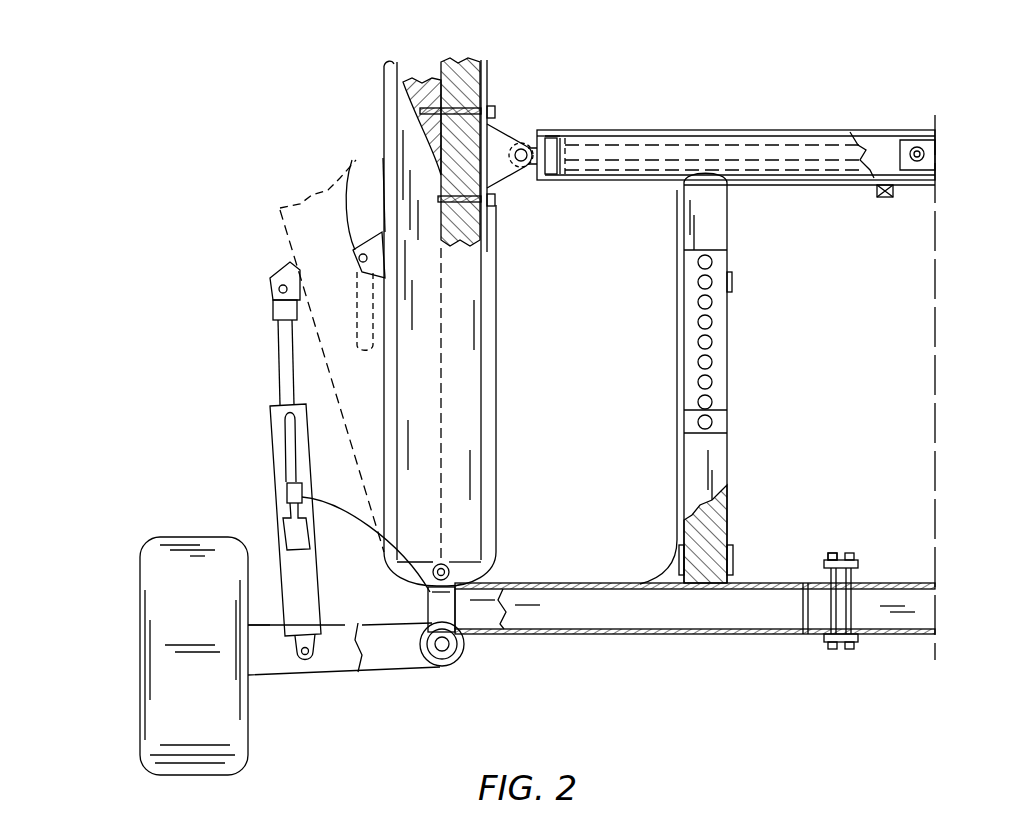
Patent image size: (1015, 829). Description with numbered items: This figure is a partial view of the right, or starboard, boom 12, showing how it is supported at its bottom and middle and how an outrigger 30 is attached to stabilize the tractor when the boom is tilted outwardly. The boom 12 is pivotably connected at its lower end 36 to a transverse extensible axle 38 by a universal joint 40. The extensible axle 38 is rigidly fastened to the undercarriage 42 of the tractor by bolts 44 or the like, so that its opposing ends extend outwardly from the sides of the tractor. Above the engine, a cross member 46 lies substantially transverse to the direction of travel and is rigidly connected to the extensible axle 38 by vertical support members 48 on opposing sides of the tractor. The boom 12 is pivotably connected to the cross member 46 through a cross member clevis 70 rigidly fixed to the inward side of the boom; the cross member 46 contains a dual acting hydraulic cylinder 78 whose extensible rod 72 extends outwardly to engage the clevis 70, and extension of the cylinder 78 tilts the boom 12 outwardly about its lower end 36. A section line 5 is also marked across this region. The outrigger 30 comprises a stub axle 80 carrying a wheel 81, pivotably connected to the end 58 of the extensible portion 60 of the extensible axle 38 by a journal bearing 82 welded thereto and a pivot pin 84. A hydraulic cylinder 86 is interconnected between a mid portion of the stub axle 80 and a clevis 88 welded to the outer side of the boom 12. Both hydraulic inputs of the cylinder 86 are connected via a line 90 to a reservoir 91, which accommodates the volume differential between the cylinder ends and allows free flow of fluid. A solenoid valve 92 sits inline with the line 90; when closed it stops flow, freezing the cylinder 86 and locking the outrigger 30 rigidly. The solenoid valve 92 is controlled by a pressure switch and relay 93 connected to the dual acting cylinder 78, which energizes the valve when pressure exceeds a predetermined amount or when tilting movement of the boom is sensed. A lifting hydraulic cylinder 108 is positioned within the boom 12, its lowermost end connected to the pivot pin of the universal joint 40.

The section line 5- 5 is at (384, 155).
The boom 12 is at (490, 100).
The outrigger 30 is at (262, 533).
The lower end 36 is at (500, 563).
The extensible axle 38 is at (497, 636).
The universal joint 40 is at (410, 592).
The undercarriage 42 is at (855, 585).
The bolts 44 is at (852, 555).
The cross member 46 is at (822, 130).
The vertical support members 48 is at (728, 480).
The end 58 is at (258, 628).
The extensible portion 60 is at (428, 608).
The cross member clevis 70 is at (518, 146).
The extensible rod 72 is at (752, 150).
The dual acting hydraulic cylinder 78 is at (633, 130).
The stub axle 80 is at (355, 672).
The wheel 81 is at (243, 740).
The journal bearing 82 is at (450, 656).
The pivot pin 84 is at (440, 652).
The hydraulic cylinder 86 is at (268, 452).
The clevis 88 is at (364, 160).
The line 90 is at (286, 420).
The reservoir 91 is at (312, 540).
The solenoid valve 92 is at (300, 490).
The pressure switch and relay 93 is at (873, 197).
The hydraulic cylinders 108 is at (445, 60).